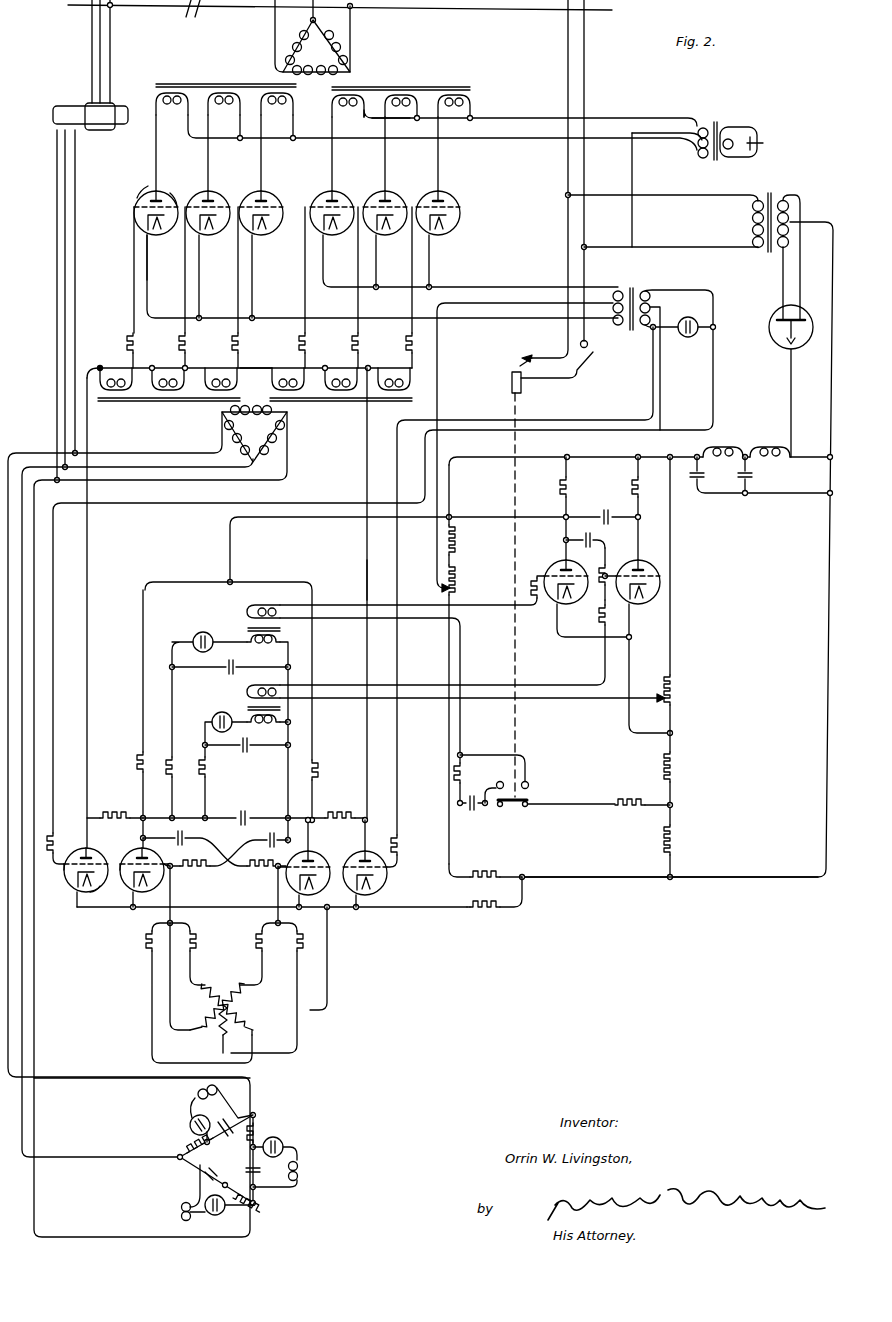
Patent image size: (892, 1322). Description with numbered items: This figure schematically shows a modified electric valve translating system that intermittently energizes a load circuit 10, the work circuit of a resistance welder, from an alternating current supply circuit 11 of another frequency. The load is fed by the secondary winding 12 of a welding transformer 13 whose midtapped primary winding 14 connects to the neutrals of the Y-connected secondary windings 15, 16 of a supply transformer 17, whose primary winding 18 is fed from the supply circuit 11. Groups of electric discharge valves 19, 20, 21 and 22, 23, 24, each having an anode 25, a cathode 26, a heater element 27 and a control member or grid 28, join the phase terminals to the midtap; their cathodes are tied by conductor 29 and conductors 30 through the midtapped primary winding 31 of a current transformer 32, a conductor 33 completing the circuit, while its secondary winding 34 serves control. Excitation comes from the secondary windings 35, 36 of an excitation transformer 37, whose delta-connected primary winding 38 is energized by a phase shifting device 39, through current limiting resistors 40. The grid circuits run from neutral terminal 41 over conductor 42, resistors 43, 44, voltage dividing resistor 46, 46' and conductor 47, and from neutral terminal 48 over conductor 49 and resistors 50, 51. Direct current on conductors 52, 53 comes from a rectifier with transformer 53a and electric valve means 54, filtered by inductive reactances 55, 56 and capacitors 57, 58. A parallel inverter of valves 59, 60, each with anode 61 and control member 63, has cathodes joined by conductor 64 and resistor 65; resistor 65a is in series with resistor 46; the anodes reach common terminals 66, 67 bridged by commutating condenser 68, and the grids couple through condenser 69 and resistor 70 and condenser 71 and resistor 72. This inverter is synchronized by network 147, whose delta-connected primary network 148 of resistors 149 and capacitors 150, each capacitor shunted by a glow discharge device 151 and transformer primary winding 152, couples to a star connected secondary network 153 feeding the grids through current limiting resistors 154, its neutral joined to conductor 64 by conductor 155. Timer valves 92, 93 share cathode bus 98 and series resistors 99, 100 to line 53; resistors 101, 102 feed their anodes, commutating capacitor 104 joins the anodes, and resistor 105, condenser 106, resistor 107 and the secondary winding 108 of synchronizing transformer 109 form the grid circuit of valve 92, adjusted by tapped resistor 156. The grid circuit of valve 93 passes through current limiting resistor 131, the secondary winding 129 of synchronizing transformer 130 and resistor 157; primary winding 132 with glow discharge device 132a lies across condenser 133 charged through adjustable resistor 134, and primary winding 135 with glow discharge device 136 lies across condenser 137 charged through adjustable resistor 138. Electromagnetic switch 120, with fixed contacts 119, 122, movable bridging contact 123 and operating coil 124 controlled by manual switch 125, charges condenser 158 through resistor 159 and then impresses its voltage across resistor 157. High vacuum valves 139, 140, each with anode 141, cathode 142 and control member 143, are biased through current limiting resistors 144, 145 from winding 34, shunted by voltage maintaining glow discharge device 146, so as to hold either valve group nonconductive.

The load circuit 10 is at (745, 114).
The alternating current supply circuit 11 is at (190, 19).
The secondary winding 12 is at (729, 158).
The welding transformer 13 is at (714, 121).
The midtapped primary winding 14 is at (701, 158).
The secondary winding 15 is at (231, 130).
The secondary winding 16 is at (354, 130).
The supply transformer 17 is at (409, 80).
The primary winding 18 is at (316, 62).
The electric discharge valve 19 is at (158, 191).
The electric discharge valve 20 is at (210, 191).
The electric discharge valve 21 is at (264, 192).
The electric discharge valve 22 is at (335, 193).
The electric discharge valve 23 is at (388, 193).
The electric discharge valve 24 is at (441, 193).
The anode 25 is at (146, 193).
The cathode 26 is at (134, 228).
The heater element 27 is at (156, 232).
The control member or grid 28 is at (172, 200).
The cathode conductor 29 is at (333, 318).
The cathode conductors 30 is at (476, 287).
The midtapped primary winding 31 is at (622, 318).
The current transformer 32 is at (634, 285).
The conductor 33 is at (636, 212).
The secondary winding 34 is at (652, 299).
The secondary winding 35 is at (168, 357).
The secondary winding 36 is at (335, 357).
The excitation transformer 37 is at (262, 385).
The delta-connected primary winding 38 is at (260, 438).
The phase shifting device 39 is at (106, 126).
The current limiting resistors 40 is at (180, 340).
The neutral terminal 41 is at (99, 365).
The conductor 42 is at (89, 680).
The resistor 43 is at (113, 812).
The resistor 44 is at (138, 759).
The voltage dividing resistor 46 is at (466, 711).
The potentiometer 46' is at (466, 515).
The conductor 47 is at (439, 392).
The neutral terminal 48 is at (369, 366).
The conductor 49 is at (366, 557).
The resistor 50 is at (340, 812).
The resistor 51 is at (318, 781).
The conductor 52 is at (680, 448).
The conductor 53 is at (598, 877).
The transformer 53a is at (771, 195).
The electric valve means 54 is at (787, 311).
The inductive reactance 55 is at (790, 450).
The inductive reactance 56 is at (726, 450).
The capacitor 57 is at (755, 477).
The capacitor 58 is at (708, 477).
The electric discharge valve 59 is at (164, 862).
The electric discharge valve 60 is at (320, 857).
The anode 61 is at (142, 850).
The control member or grid 63 is at (123, 864).
The cathode conductor 64 is at (224, 906).
The resistor 65 is at (490, 913).
The resistor 65a is at (474, 883).
The common terminal 66 is at (145, 816).
The common terminal 67 is at (309, 818).
The commutating condenser 68 is at (245, 811).
The condenser 69 is at (279, 840).
The resistor 70 is at (196, 872).
The condenser 71 is at (183, 838).
The resistor 72 is at (262, 872).
The electric valve 92 is at (645, 562).
The electric valve 93 is at (560, 562).
The cathode bus 98 is at (583, 638).
The resistor 99 is at (675, 775).
The resistor 100 is at (675, 845).
The resistor 101 is at (638, 482).
The resistor 102 is at (568, 481).
The commutating capacitor 104 is at (605, 510).
The resistor 105 is at (610, 548).
The condenser 106 is at (587, 535).
The resistor 107 is at (604, 612).
The secondary winding 108 is at (266, 682).
The synchronizing transformer 109 is at (250, 703).
The fixed contacts 119 is at (529, 784).
The electromagnetic switch 120 is at (512, 386).
The fixed contacts 122 is at (526, 808).
The movable bridging contact 123 is at (530, 801).
The operating coil 124 is at (519, 363).
The manual switch 125 is at (590, 362).
The secondary winding 129 is at (256, 604).
The synchronizing transformer 130 is at (249, 618).
The current limiting resistor 131 is at (539, 600).
The primary winding 132 is at (270, 648).
The glow discharge device 132a is at (195, 635).
The condenser 133 is at (230, 671).
The adjustable resistor 134 is at (177, 755).
The primary winding 135 is at (270, 728).
The glow discharge device 136 is at (213, 716).
The condenser 137 is at (250, 750).
The adjustable resistor 138 is at (208, 774).
The electric valve 139 is at (100, 888).
The electric valve 140 is at (371, 851).
The anode 141 is at (89, 848).
The cathode 142 is at (74, 890).
The control member or grid 143 is at (64, 871).
The current limiting resistor 144 is at (68, 826).
The current limiting resistor 145 is at (400, 840).
The voltage maintaining glow discharge device 146 is at (688, 337).
The synchronizing network 147 is at (303, 1090).
The delta-connected primary network 148 is at (236, 1172).
The resistor 149 is at (183, 1150).
The capacitor 150 is at (223, 1124).
The glow discharge device 151 is at (190, 1125).
The transformer primary winding 152 is at (197, 1096).
The star connected secondary network 153 is at (261, 987).
The current limiting resistor 154 is at (148, 942).
The conductor 155 is at (329, 968).
The resistor 156 is at (675, 698).
The resistor 157 is at (463, 785).
The condenser 158 is at (475, 808).
The resistor 159 is at (630, 799).